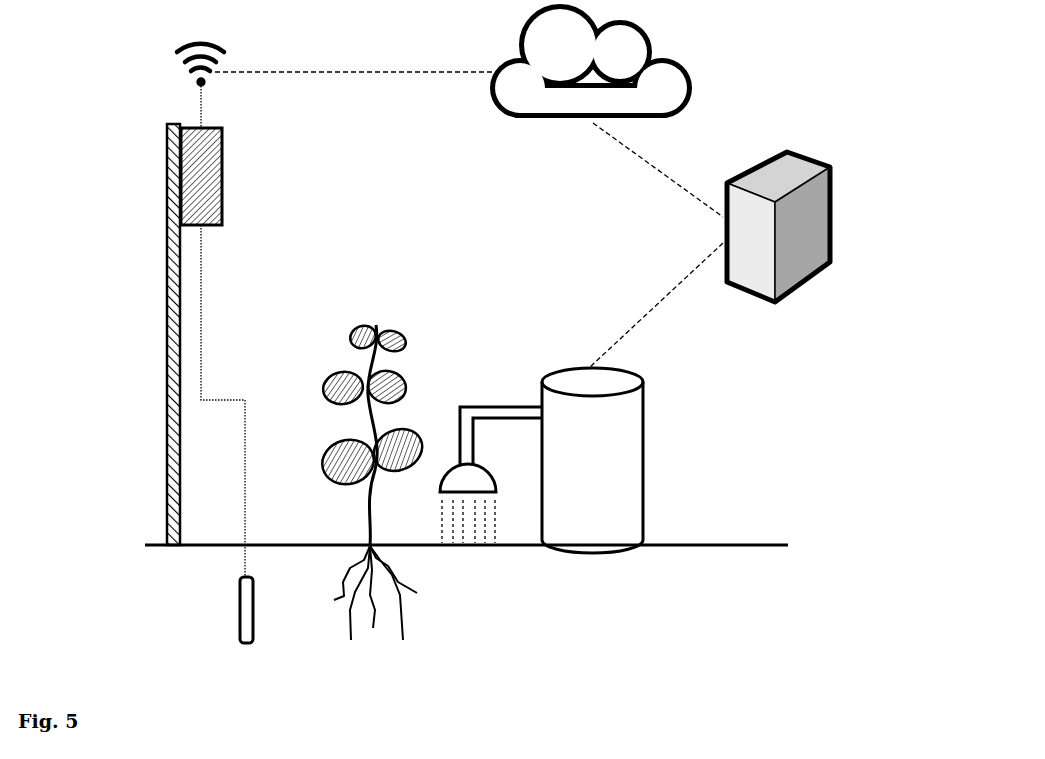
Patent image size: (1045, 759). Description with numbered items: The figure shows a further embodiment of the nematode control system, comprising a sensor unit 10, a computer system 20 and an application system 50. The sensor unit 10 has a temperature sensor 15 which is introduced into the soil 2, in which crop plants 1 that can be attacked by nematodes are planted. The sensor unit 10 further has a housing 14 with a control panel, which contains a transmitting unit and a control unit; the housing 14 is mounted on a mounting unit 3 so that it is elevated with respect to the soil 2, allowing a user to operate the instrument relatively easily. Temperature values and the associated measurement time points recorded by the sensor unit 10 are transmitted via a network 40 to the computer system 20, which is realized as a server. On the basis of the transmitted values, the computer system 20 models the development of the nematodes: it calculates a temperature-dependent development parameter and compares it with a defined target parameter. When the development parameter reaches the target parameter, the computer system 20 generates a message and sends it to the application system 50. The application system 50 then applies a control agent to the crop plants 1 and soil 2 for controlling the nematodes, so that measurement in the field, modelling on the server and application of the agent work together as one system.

The crop plants 1 is at (403, 380).
The soil 2 is at (287, 574).
The mounting unit 3 is at (165, 250).
The sensor unit 10 is at (337, 310).
The housing 14 is at (227, 204).
The temperature sensor 15 is at (238, 607).
The computer system 20 is at (801, 220).
The network 40 is at (621, 57).
The application system 50 is at (645, 437).